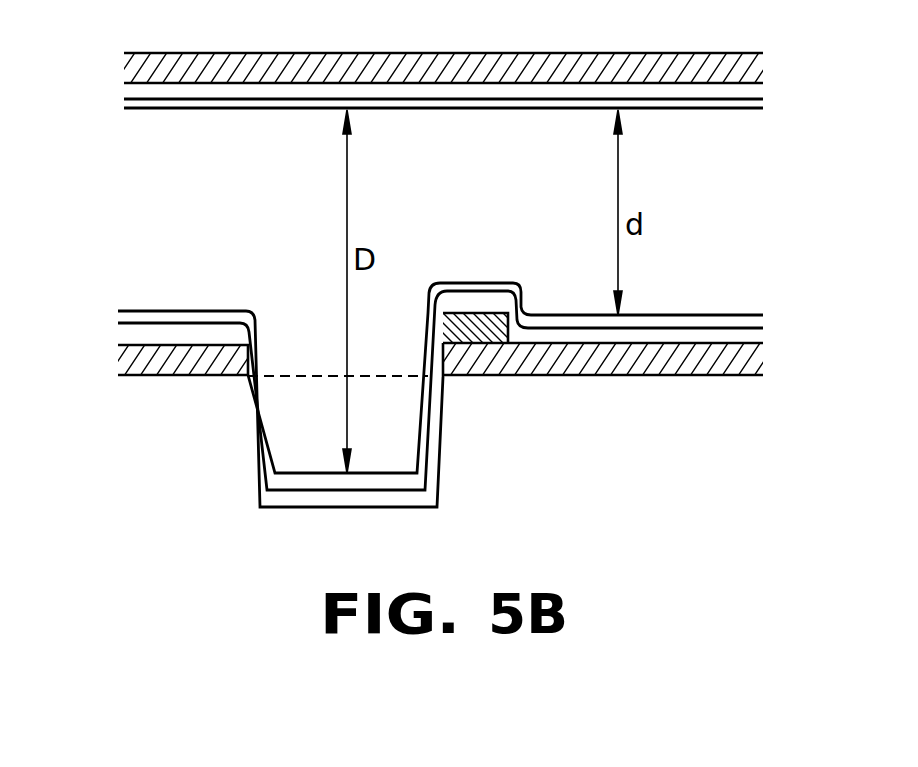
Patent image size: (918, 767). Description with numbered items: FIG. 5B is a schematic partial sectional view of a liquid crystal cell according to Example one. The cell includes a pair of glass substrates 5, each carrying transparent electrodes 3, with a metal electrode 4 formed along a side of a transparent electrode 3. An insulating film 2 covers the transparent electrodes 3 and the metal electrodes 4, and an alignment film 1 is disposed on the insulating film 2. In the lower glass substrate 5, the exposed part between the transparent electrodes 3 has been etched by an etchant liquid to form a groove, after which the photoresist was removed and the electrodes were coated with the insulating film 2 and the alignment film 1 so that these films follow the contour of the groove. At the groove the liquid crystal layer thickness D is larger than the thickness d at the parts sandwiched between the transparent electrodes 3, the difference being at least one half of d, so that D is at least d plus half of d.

The alignment film 1 is at (124, 106).
The insulating film 2 is at (128, 92).
The transparent electrode 3 is at (126, 70).
The metal electrode 4 is at (445, 326).
The glass substrate 5 is at (195, 432).